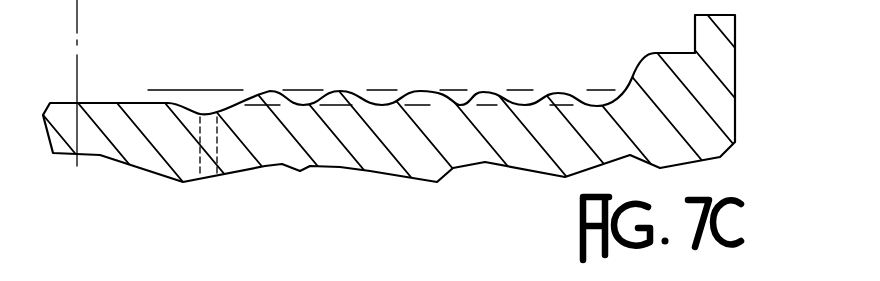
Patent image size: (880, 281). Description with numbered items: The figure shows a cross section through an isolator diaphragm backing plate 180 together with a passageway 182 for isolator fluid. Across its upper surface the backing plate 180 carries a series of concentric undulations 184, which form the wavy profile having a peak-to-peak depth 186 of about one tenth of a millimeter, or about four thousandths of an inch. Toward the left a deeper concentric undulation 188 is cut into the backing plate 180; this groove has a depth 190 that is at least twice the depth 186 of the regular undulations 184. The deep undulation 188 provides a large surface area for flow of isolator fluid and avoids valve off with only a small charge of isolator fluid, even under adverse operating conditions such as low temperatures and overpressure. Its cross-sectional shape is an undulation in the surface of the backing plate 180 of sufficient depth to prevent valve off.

The backing plate 180 is at (735, 128).
The passageway 182 is at (208, 176).
The concentric undulations 184 is at (520, 88).
The depth 186 is at (382, 155).
The deeper concentric undulation 188 is at (188, 113).
The depth 190 is at (207, 108).